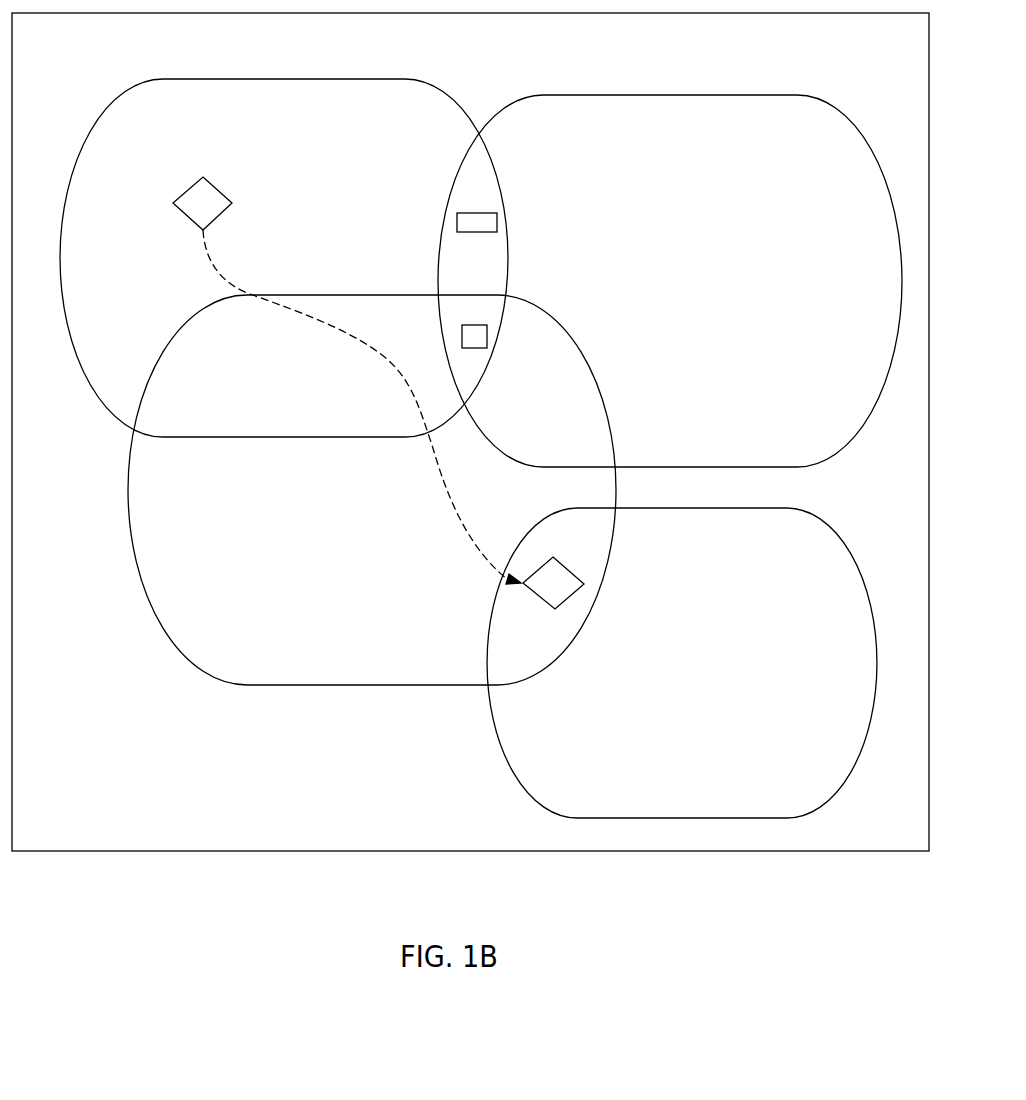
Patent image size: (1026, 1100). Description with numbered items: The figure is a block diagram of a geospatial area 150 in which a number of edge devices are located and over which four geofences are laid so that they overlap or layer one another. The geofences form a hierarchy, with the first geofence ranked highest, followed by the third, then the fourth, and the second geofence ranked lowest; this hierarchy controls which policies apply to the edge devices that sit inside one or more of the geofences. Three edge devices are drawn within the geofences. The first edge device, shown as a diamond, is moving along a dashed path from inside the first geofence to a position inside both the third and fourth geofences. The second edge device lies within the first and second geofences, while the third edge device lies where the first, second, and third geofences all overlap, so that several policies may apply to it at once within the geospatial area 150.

The geospatial area 150 is at (470, 432).